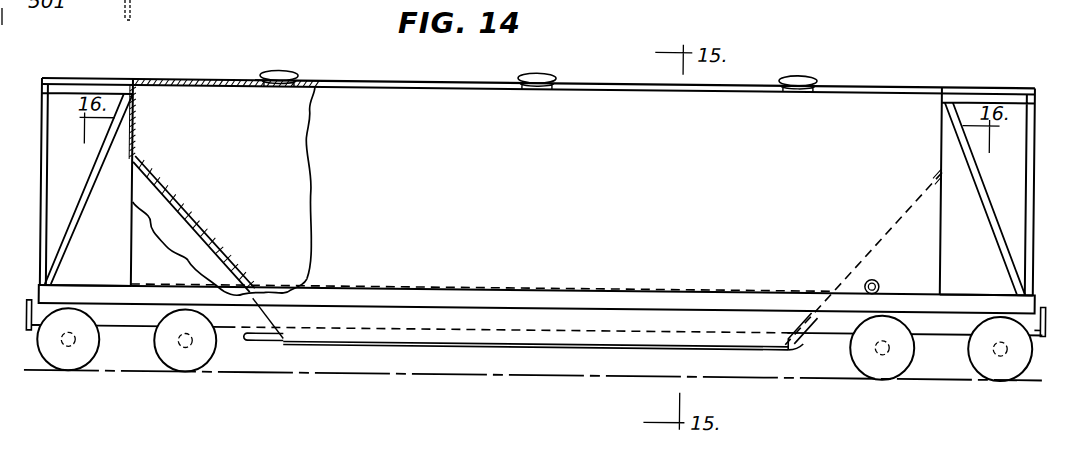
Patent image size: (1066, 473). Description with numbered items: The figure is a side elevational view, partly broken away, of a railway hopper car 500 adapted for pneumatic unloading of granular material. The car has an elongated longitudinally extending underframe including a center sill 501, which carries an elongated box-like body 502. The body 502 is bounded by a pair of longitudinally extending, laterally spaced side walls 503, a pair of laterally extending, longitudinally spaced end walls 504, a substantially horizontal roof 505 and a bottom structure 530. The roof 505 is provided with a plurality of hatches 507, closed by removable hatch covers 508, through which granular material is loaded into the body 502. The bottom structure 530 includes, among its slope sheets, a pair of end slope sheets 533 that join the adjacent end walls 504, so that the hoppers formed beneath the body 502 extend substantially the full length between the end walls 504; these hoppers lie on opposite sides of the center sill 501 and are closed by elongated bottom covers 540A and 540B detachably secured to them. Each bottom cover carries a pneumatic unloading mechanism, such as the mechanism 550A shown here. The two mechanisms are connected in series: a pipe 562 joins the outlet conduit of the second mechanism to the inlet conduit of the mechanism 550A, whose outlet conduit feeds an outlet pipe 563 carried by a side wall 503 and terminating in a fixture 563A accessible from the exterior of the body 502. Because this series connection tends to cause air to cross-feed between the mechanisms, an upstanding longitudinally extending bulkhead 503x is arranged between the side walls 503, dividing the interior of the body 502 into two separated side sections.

The railway hopper car 500 is at (927, 43).
The center sill 501 is at (126, 317).
The body 502 is at (397, 113).
The side wall 503 is at (461, 97).
The bulkhead 503x is at (299, 167).
The end wall 504 is at (138, 131).
The roof 505 is at (860, 78).
The hatch 507 is at (548, 83).
The hatch cover 508 is at (540, 71).
The bottom structure 530 is at (284, 280).
The end slope sheet 533 is at (174, 202).
The bottom cover 540A is at (451, 343).
The bottom cover 540B is at (100, 0).
The pneumatic unloading mechanism 550A is at (426, 333).
The pipe 562 is at (248, 338).
The outlet pipe 563 is at (816, 334).
The fixture 563A is at (879, 274).